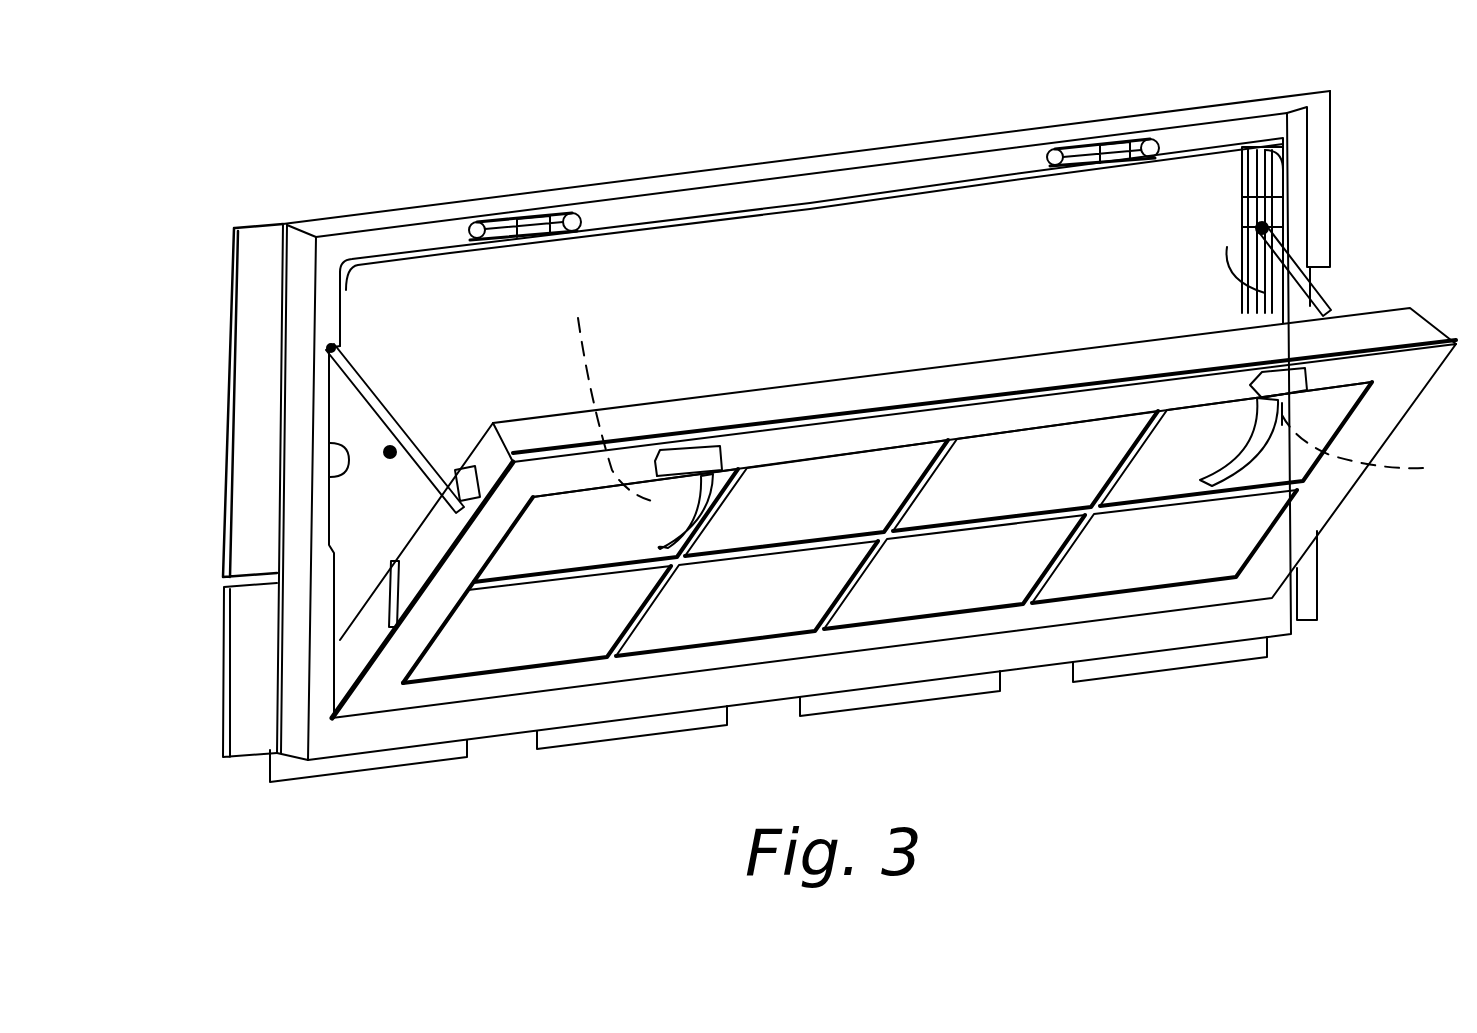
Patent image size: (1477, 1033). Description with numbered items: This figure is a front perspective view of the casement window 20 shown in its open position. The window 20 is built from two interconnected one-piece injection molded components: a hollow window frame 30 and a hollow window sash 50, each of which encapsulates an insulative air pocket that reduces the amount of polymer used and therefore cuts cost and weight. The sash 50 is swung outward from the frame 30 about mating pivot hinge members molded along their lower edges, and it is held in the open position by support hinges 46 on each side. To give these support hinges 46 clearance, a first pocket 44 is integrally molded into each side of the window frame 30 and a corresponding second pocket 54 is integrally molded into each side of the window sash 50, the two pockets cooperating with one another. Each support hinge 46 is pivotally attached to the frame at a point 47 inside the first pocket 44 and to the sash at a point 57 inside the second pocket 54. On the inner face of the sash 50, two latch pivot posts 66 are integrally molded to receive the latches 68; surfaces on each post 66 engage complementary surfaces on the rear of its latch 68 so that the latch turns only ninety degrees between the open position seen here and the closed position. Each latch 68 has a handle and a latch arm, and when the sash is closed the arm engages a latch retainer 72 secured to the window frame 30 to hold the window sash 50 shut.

The casement window 20 is at (833, 112).
The window frame 30 is at (1129, 108).
The first pocket 44 is at (1268, 229).
The support hinge 46 is at (1326, 278).
The pivotal attachment point 47 is at (1258, 230).
The window sash 50 is at (942, 366).
The second pocket 54 is at (413, 563).
The pivotal attachment point 57 is at (453, 485).
The latch pivot post 66 is at (1014, 390).
The latch 68 is at (1242, 369).
The latch retainer 72 is at (517, 212).